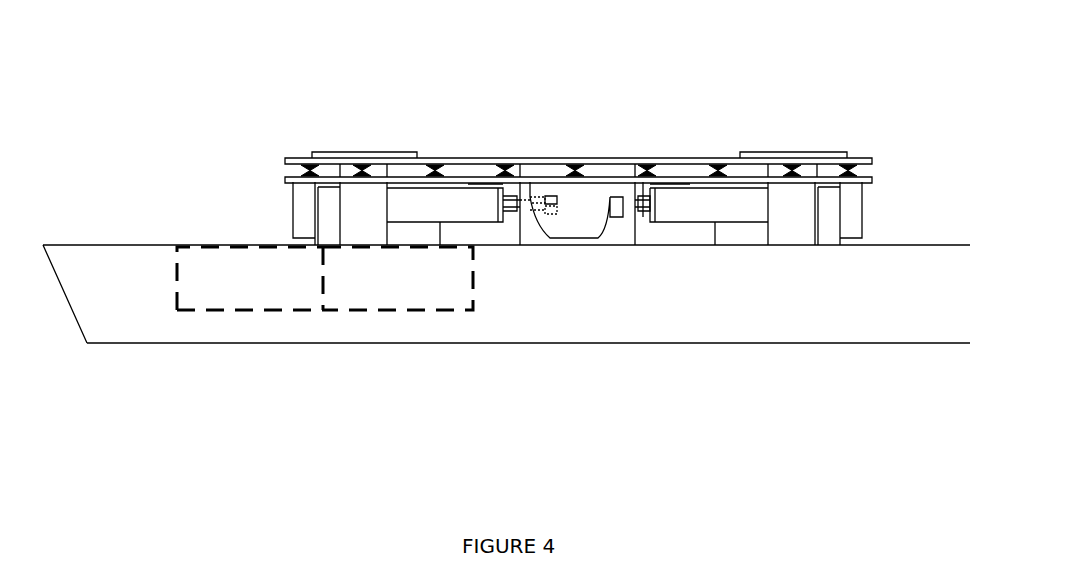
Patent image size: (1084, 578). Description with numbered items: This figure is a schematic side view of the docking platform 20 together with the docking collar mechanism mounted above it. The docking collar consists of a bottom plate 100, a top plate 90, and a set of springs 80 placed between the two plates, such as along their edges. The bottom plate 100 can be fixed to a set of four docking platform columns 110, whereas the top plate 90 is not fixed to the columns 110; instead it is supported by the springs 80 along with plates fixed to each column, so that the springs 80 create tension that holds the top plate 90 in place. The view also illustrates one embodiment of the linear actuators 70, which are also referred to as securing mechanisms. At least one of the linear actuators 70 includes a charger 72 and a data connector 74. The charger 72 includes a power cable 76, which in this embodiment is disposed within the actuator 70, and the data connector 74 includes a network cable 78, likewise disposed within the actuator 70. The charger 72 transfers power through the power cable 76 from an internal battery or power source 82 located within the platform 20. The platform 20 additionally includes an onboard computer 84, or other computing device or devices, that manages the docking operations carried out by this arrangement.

The docking platform 20 is at (120, 345).
The linear actuator 70 is at (683, 222).
The charger 72 is at (553, 197).
The data connector 74 is at (557, 208).
The power cable 76 is at (535, 197).
The network cable 78 is at (507, 196).
The springs 80 is at (873, 180).
The internal battery or power source 82 is at (175, 273).
The onboard computer 84 is at (430, 310).
The top plate 90 is at (663, 158).
The bottom plate 100 is at (283, 172).
The docking platform columns 110 is at (373, 150).